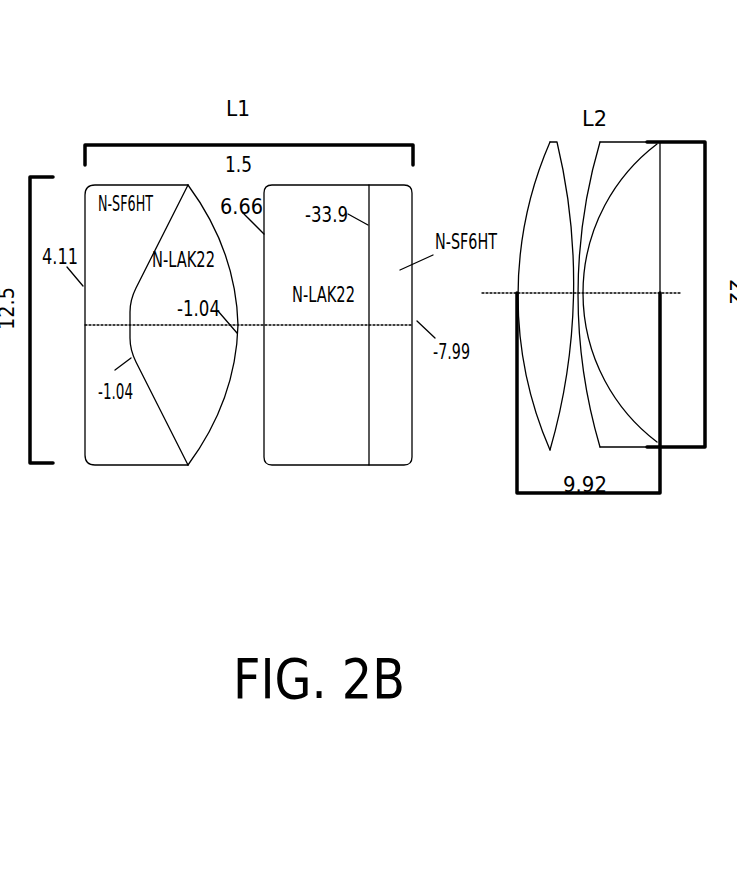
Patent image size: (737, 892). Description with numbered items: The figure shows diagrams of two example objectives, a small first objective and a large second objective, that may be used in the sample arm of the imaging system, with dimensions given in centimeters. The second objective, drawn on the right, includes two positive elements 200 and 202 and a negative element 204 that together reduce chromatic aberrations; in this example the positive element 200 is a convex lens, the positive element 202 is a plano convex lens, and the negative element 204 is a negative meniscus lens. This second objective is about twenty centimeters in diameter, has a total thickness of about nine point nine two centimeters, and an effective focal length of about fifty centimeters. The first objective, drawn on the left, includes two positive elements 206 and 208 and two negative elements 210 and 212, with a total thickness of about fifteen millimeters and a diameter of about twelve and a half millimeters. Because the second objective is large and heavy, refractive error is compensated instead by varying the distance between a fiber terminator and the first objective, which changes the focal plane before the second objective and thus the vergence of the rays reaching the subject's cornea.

The positive element 200 is at (542, 140).
The positive element 202 is at (662, 173).
The negative element 204 is at (635, 140).
The positive element 206 is at (197, 467).
The positive element 208 is at (312, 466).
The negative element 210 is at (112, 467).
The negative element 212 is at (408, 467).